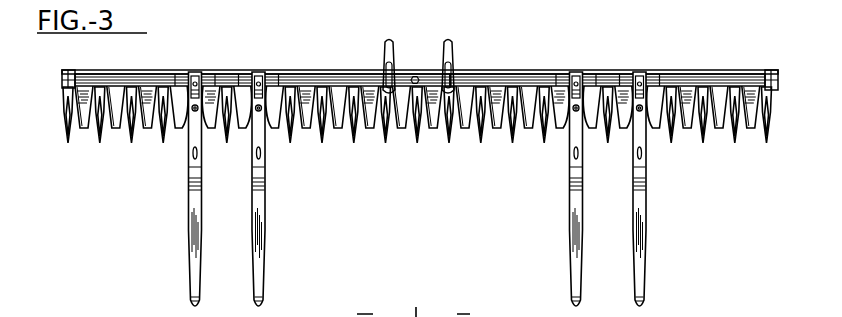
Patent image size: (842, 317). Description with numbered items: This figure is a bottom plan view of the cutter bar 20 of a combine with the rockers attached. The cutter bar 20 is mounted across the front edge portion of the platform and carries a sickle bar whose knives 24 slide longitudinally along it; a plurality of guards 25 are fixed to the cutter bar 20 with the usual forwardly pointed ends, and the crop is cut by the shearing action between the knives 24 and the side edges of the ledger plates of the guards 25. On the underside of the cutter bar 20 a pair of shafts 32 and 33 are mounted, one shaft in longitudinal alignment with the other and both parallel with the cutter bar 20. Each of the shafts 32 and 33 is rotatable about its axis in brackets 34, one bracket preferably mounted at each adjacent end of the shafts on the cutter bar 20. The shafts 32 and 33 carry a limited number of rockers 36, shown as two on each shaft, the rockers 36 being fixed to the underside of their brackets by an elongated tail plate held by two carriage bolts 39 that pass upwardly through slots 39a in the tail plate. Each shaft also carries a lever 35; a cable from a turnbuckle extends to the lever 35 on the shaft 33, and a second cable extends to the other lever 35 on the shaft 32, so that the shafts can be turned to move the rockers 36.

The cutter bar 20 is at (124, 70).
The knives 24 is at (340, 126).
The guards 25 is at (132, 133).
The shaft 32 is at (329, 77).
The shaft 33 is at (538, 76).
The brackets 34 is at (63, 83).
The lever 35 is at (445, 67).
The rockers 36 is at (193, 272).
The carriage bolts 39 is at (269, 74).
The slots 39a is at (197, 88).